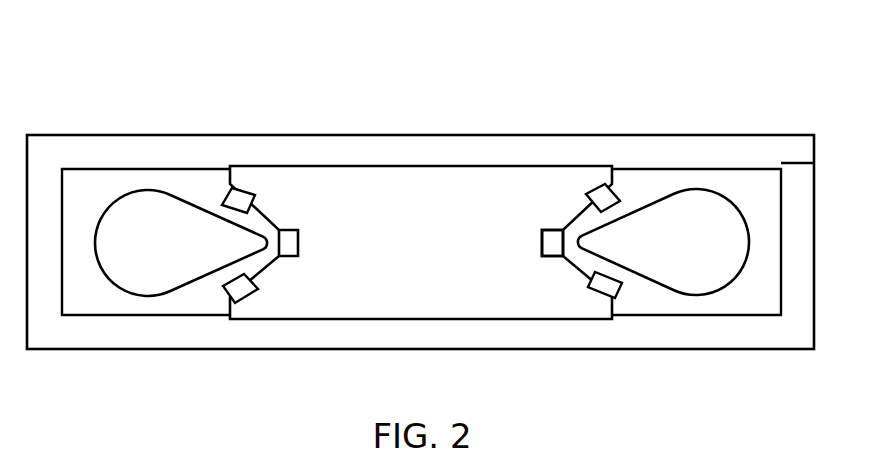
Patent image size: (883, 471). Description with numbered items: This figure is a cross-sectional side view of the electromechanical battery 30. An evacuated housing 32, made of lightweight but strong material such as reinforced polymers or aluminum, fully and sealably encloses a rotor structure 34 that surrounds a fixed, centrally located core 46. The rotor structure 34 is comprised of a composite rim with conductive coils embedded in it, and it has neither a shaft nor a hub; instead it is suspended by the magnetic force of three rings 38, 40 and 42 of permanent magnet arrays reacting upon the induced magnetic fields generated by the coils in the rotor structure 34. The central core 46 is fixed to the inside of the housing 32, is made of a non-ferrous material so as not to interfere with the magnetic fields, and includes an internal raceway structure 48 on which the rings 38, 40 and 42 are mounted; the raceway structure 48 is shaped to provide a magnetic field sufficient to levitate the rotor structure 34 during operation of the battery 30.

The electromechanical battery 30 is at (811, 57).
The housing 32 is at (417, 135).
The rotor structure 34 is at (153, 278).
The ring of permanent magnet arrays 38 is at (605, 200).
The ring of permanent magnet arrays 40 is at (555, 248).
The ring of permanent magnet arrays 42 is at (608, 290).
The central core 46 is at (345, 295).
The internal raceway structure 48 is at (265, 214).